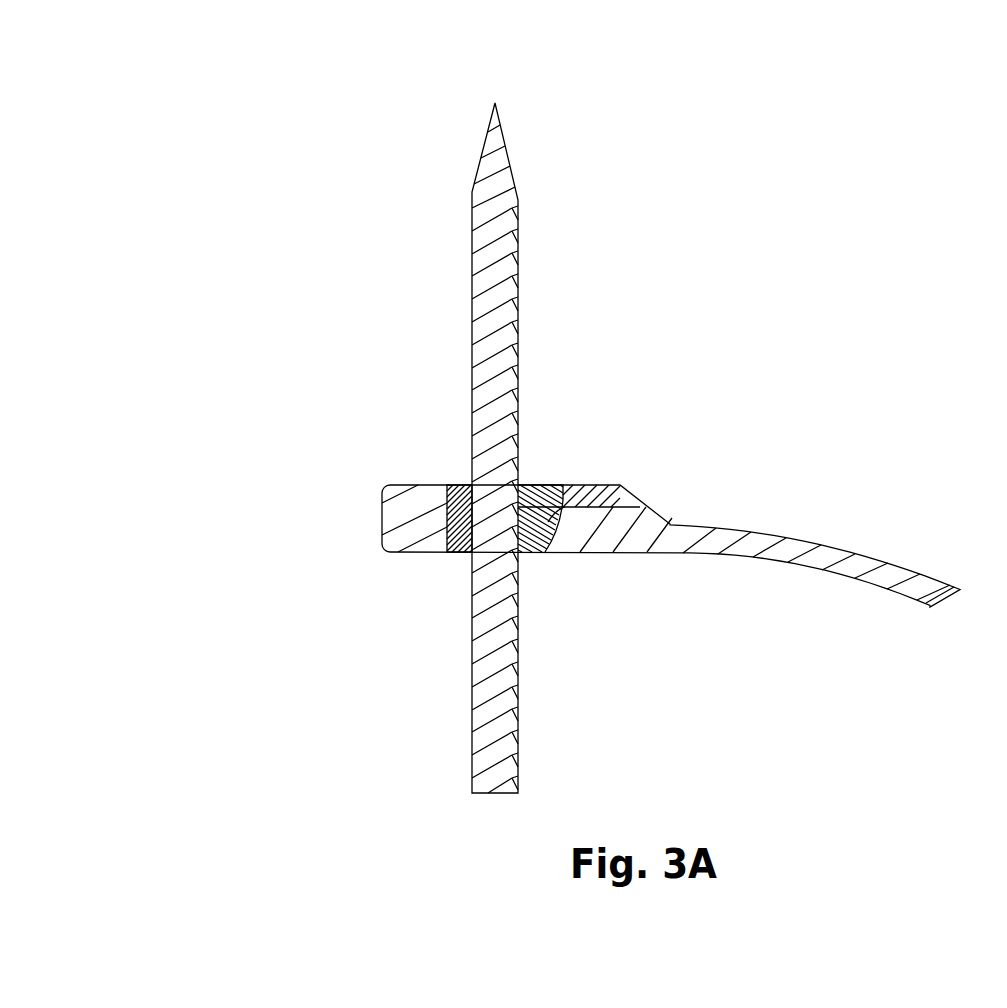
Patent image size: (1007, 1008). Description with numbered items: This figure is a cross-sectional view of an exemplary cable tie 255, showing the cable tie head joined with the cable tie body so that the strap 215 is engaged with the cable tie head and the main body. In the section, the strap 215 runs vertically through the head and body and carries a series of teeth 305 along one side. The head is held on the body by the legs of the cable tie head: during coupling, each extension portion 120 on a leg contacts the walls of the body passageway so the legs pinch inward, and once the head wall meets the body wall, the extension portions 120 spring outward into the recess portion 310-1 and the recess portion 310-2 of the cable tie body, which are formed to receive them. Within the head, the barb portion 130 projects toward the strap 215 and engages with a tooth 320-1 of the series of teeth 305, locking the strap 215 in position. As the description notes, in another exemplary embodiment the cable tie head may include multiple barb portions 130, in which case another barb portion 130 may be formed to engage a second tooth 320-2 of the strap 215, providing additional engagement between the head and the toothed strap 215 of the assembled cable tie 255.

The cable tie 255 is at (187, 66).
The strap 215 is at (472, 663).
The series of teeth 305 is at (518, 691).
The recess portion 310-1 is at (443, 546).
The recess portion 310-2 is at (668, 524).
The extension portion 120 is at (444, 554).
The barb portion 130 is at (518, 502).
The tooth 320-1 is at (517, 500).
The tooth 320-2 is at (558, 538).